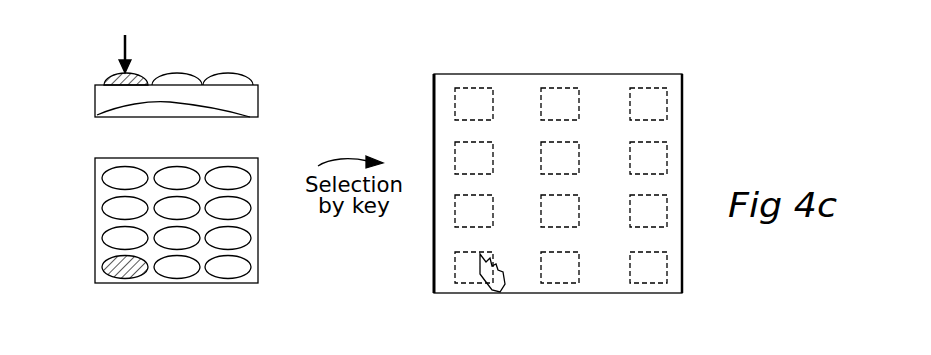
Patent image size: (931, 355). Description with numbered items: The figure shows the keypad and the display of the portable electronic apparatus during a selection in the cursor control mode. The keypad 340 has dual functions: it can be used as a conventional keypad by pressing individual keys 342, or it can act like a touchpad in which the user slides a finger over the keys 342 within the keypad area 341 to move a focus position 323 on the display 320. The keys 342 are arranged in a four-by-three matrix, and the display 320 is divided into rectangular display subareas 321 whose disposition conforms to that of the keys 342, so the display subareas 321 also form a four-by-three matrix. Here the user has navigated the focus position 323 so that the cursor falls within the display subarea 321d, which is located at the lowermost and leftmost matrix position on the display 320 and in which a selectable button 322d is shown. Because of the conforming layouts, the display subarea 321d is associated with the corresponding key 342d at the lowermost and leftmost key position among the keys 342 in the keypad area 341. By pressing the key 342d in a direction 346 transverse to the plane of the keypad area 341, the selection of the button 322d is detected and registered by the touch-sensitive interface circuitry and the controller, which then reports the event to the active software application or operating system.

The display 320 is at (676, 78).
The display subareas 321 is at (656, 110).
The display subarea 321d is at (456, 256).
The button 322d is at (460, 277).
The focus position 323 is at (492, 268).
The keypad 340 is at (213, 103).
The keypad area 341 is at (256, 84).
The keys 342 is at (168, 88).
The key 342d is at (108, 79).
The direction 346 is at (128, 42).